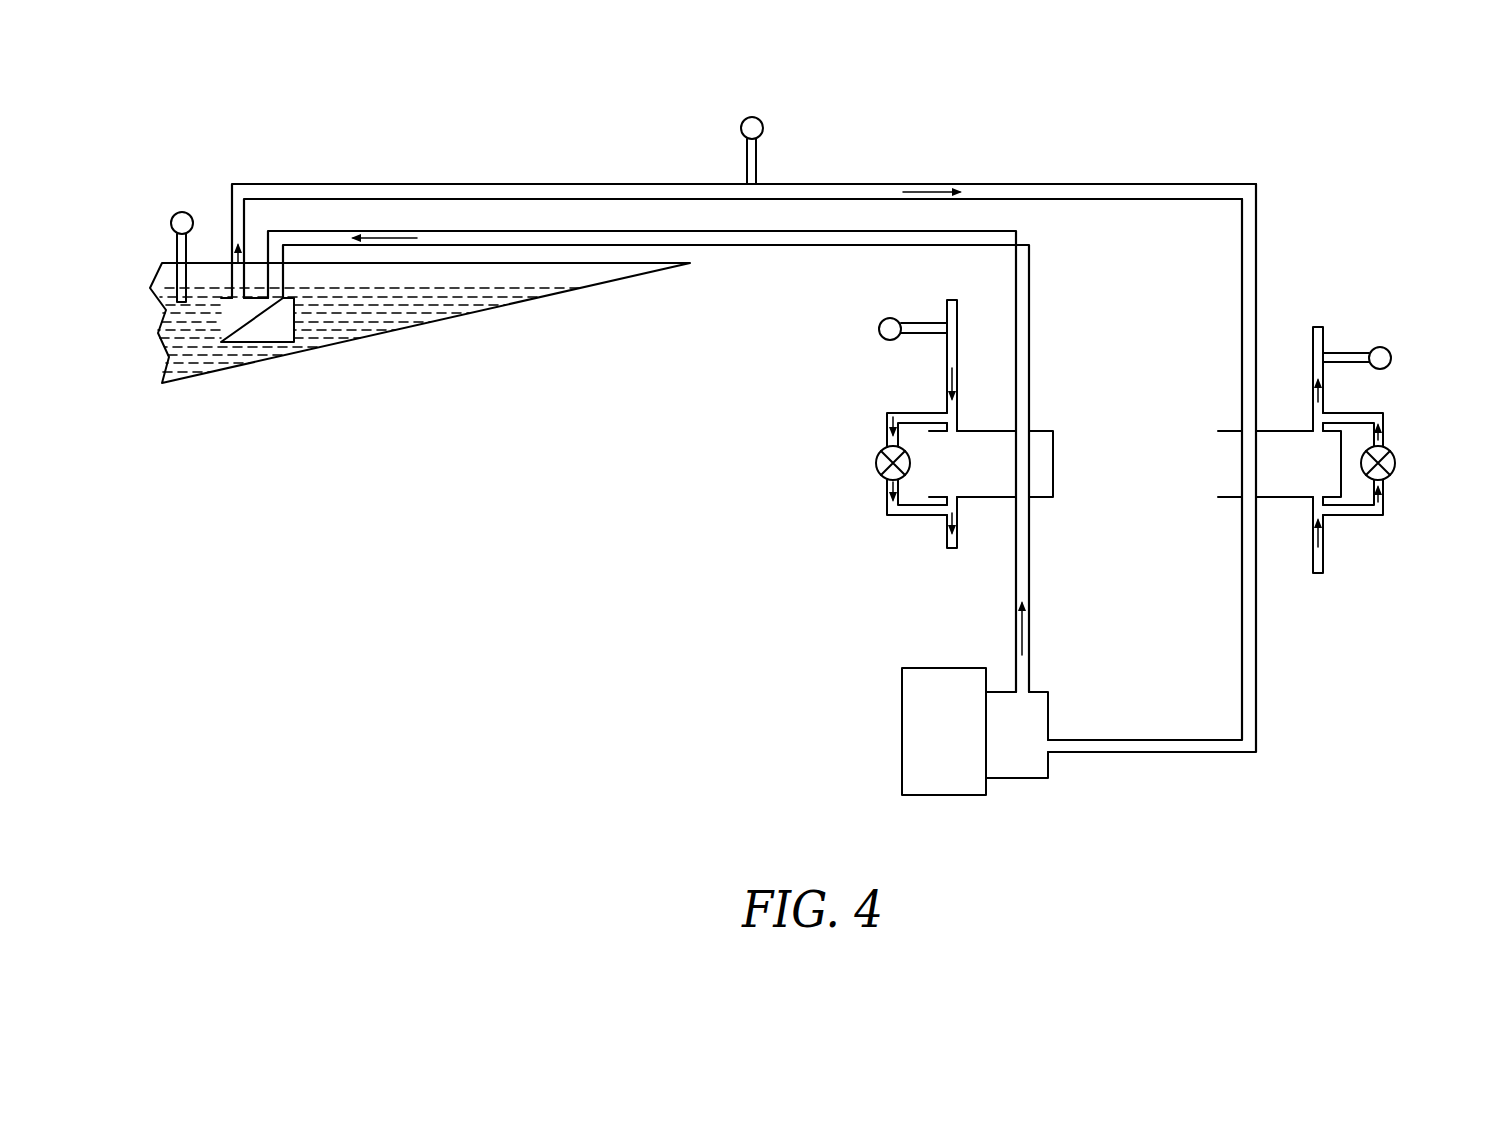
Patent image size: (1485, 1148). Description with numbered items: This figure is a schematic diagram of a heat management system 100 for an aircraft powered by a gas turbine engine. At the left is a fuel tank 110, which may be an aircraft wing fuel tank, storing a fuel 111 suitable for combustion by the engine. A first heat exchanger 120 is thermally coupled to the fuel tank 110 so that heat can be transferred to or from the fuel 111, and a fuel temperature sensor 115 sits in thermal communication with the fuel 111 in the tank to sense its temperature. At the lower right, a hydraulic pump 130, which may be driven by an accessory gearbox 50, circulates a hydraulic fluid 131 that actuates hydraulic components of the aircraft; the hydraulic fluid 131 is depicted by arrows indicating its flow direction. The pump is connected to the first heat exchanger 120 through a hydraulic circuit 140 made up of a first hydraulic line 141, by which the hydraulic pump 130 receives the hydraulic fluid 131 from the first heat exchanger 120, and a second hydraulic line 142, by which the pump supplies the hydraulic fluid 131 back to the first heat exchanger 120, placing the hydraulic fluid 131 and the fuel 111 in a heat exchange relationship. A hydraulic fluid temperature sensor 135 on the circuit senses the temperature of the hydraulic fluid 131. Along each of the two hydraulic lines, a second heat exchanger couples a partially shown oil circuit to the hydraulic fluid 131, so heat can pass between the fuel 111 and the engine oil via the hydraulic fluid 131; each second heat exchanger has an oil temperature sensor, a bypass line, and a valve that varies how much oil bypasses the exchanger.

The heat management system 100 is at (1318, 91).
The fuel tank 110 is at (420, 355).
The fuel 111 is at (352, 330).
The fuel temperature sensor 115 is at (171, 222).
The first heat exchanger 120 is at (247, 330).
The hydraulic pump 130 is at (1036, 765).
The hydraulic fluid 131 is at (932, 190).
The hydraulic fluid temperature sensor 135 is at (741, 128).
The hydraulic circuit 140 is at (856, 468).
The first hydraulic line 141 is at (1257, 657).
The second hydraulic line 142 is at (1030, 583).
The accessory gearbox 50 is at (920, 740).